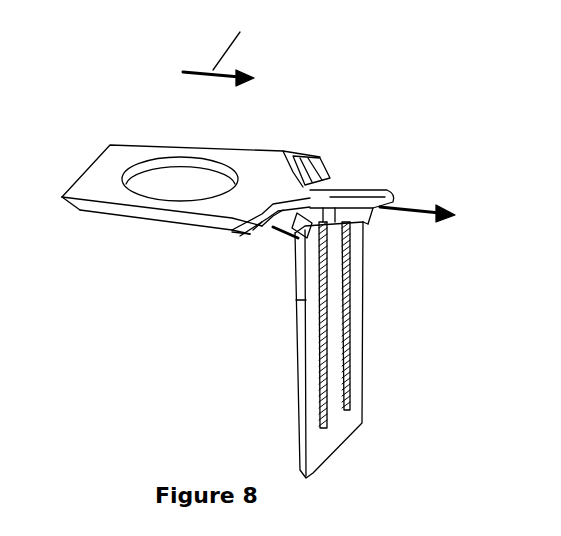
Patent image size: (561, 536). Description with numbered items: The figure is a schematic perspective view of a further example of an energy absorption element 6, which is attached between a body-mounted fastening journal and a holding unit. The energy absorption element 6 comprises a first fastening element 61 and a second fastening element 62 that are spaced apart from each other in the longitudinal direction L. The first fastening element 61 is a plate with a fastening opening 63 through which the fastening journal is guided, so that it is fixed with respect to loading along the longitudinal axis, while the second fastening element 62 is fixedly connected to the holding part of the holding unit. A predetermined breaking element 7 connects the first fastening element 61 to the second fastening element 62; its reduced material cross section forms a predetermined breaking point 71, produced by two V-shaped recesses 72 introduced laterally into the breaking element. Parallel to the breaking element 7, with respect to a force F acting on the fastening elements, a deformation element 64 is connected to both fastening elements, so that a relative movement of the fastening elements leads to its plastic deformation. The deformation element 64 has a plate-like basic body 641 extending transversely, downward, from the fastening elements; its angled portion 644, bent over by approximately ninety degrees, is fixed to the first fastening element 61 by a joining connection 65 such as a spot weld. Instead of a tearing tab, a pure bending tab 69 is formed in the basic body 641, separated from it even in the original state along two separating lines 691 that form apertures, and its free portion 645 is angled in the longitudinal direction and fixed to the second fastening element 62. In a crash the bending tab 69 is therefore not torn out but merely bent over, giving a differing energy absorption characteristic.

The energy absorption element 6 is at (307, 103).
The predetermined breaking element 7 is at (300, 187).
The first fastening element 61 is at (118, 163).
The second fastening element 62 is at (367, 193).
The fastening opening 63 is at (184, 182).
The deformation element 64 is at (365, 383).
The joining connection 65 is at (232, 232).
The bending tab 69 is at (337, 292).
The predetermined breaking point 71 is at (333, 160).
The V-shaped recesses 72 is at (292, 230).
The basic body 641 is at (297, 308).
The angled portion 644 is at (253, 230).
The free portion 645 is at (363, 228).
The separating lines 691 is at (347, 318).
The longitudinal direction L is at (218, 51).
The force F is at (417, 199).